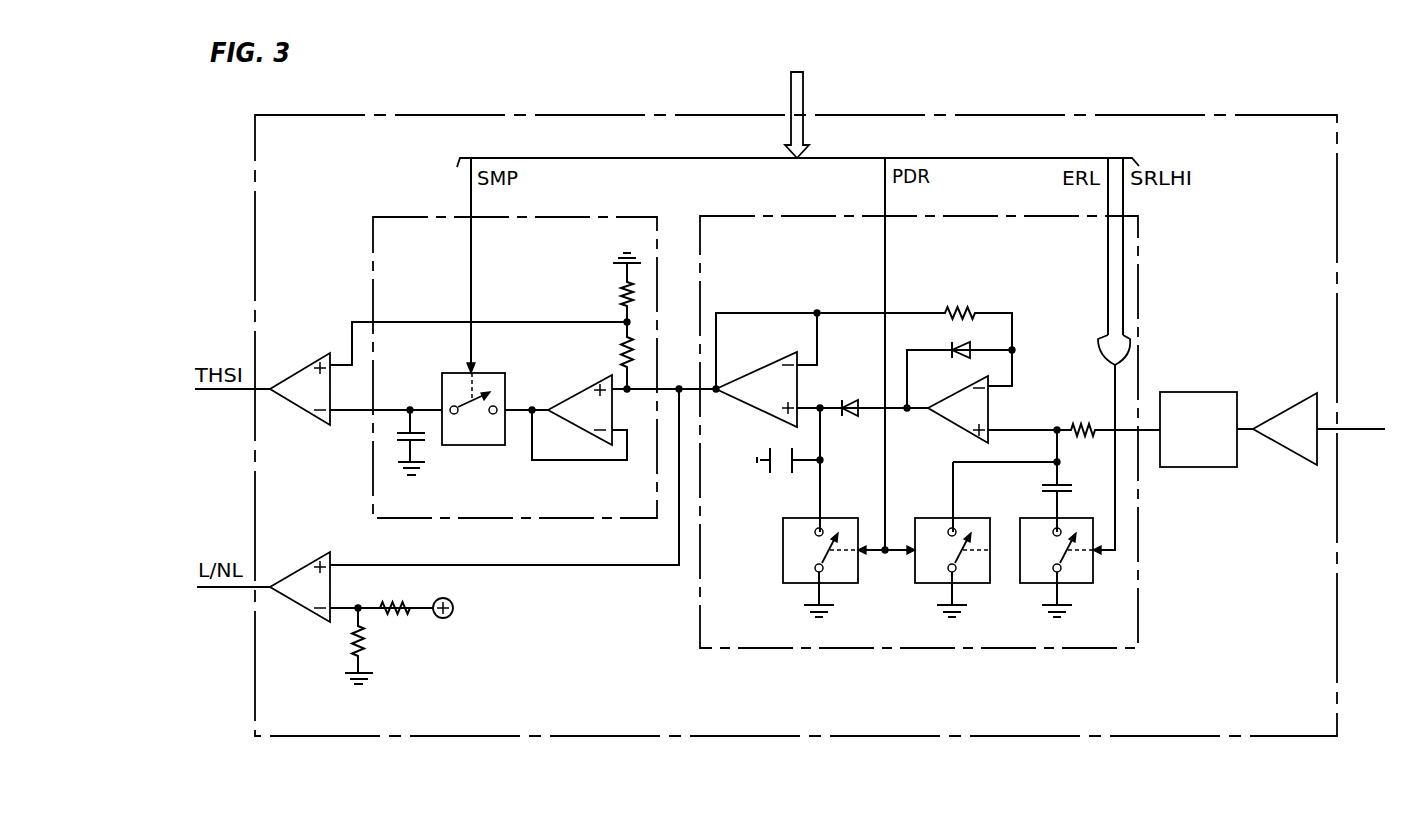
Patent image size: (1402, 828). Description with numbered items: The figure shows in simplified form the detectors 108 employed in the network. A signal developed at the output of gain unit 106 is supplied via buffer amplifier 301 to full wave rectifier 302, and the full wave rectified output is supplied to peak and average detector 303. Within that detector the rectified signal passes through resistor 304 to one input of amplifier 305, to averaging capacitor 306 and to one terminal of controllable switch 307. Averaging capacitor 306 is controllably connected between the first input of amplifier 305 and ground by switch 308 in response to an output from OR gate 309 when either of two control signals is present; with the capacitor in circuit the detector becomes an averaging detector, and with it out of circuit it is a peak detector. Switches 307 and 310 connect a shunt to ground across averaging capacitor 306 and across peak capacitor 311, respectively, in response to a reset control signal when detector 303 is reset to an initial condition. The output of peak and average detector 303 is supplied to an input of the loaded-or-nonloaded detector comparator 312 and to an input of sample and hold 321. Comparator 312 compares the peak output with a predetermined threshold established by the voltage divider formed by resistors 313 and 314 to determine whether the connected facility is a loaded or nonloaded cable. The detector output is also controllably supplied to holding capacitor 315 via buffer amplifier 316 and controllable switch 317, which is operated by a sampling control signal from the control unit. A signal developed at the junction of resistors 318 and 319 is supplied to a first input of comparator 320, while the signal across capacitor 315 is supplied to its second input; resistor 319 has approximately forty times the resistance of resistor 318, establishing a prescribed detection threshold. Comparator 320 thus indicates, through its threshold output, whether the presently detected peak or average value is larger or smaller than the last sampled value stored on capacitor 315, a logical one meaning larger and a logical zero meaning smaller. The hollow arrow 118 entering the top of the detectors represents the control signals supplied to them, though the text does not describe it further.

The detectors 108 is at (417, 116).
The control signal input 118 is at (803, 85).
The gain unit 106 is at (1368, 429).
The buffer amplifier 301 is at (1272, 415).
The full wave rectifier 302 is at (1178, 392).
The peak and average detector 303 is at (905, 650).
The resistor 304 is at (1094, 421).
The amplifier 305 is at (960, 423).
The averaging capacitor 306 is at (1072, 484).
The controllable switch 307 is at (965, 517).
The switch 308 is at (1068, 517).
The OR gate 309 is at (1098, 353).
The switch 310 is at (838, 517).
The peak capacitor 311 is at (794, 476).
The L/NL detector comparator 312 is at (291, 574).
The resistor 313 is at (370, 649).
The resistor 314 is at (387, 600).
The holding capacitor 315 is at (428, 438).
The buffer amplifier 316 is at (580, 392).
The controllable switch 317 is at (458, 370).
The resistor 318 is at (622, 350).
The resistor 319 is at (622, 292).
The comparator 320 is at (292, 379).
The sample and hold 321 is at (505, 518).